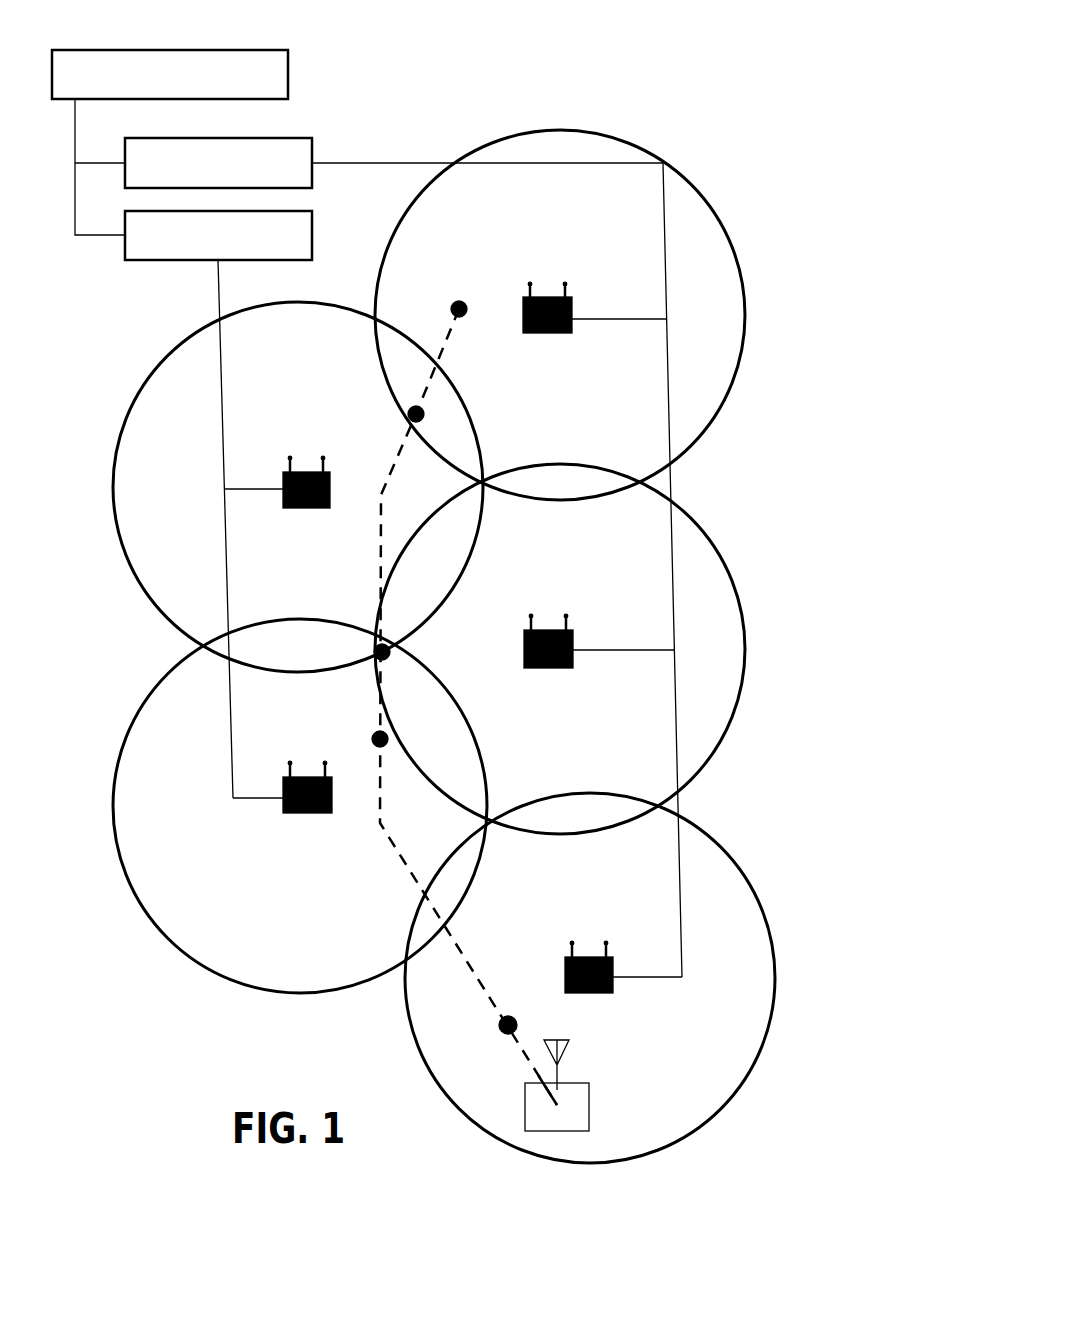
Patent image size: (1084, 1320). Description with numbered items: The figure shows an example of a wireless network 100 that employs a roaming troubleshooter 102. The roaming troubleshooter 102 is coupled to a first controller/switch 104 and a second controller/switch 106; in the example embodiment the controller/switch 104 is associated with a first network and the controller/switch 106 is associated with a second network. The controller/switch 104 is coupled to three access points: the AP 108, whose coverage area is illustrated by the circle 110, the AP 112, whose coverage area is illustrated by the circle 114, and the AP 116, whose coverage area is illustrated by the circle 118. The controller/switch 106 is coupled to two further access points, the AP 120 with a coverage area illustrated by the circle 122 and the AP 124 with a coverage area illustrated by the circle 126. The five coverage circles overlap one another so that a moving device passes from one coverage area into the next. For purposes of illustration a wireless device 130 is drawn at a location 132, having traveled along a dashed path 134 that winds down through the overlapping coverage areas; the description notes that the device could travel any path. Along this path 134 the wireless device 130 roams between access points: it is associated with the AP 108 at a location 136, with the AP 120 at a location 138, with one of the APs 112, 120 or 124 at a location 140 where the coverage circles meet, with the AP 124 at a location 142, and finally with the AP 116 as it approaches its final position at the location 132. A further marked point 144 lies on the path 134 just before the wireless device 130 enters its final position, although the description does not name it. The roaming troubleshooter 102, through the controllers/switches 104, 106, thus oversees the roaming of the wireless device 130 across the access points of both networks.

The wireless network 100 is at (446, 60).
The roaming troubleshooter 102 is at (233, 50).
The controller/switch 104 is at (282, 138).
The controller/switch 106 is at (186, 262).
The access point 108 is at (572, 327).
The circle 110 is at (712, 423).
The access point 112 is at (573, 664).
The circle 114 is at (713, 748).
The access point 116 is at (613, 988).
The circle 118 is at (725, 1105).
The access point 120 is at (331, 498).
The circle 122 is at (172, 628).
The access point 124 is at (332, 806).
The circle 126 is at (182, 952).
The wireless device 130 is at (589, 1097).
The location 132 is at (555, 1106).
The path 134 is at (450, 332).
The location 136 is at (466, 303).
The location 138 is at (408, 414).
The location 140 is at (392, 657).
The location 142 is at (372, 740).
The roaming event point 144 is at (510, 1037).